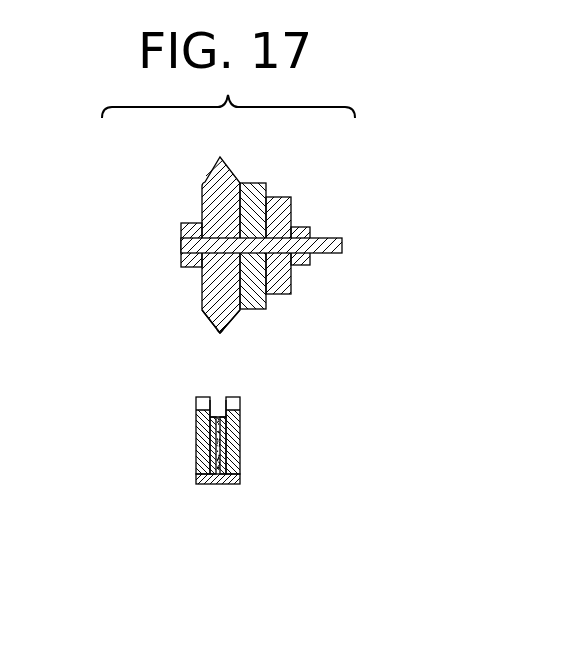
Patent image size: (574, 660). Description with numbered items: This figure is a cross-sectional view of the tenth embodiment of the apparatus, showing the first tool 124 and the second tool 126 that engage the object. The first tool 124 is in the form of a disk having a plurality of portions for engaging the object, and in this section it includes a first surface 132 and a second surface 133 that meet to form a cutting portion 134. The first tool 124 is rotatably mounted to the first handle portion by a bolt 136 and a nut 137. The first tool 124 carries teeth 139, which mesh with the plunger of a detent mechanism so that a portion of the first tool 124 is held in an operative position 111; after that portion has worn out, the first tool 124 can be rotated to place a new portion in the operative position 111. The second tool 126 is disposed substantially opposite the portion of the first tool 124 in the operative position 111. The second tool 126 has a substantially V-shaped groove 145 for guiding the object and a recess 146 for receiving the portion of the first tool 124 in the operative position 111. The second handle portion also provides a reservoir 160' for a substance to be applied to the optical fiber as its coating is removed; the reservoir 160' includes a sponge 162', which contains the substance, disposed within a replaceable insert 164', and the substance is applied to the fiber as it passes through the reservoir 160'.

The operative position 111 is at (236, 352).
The first tool 124 is at (212, 174).
The second tool 126 is at (221, 483).
The first surface 132 is at (237, 318).
The second surface 133 is at (219, 333).
The cutting portion 134 is at (224, 338).
The bolt 136 is at (182, 245).
The nut 137 is at (303, 228).
The teeth 139 is at (257, 183).
The V-shaped groove 145 is at (197, 404).
The recess 146 is at (217, 388).
The reservoir 160' is at (220, 494).
The sponge 162' is at (250, 476).
The replaceable insert 164' is at (200, 503).